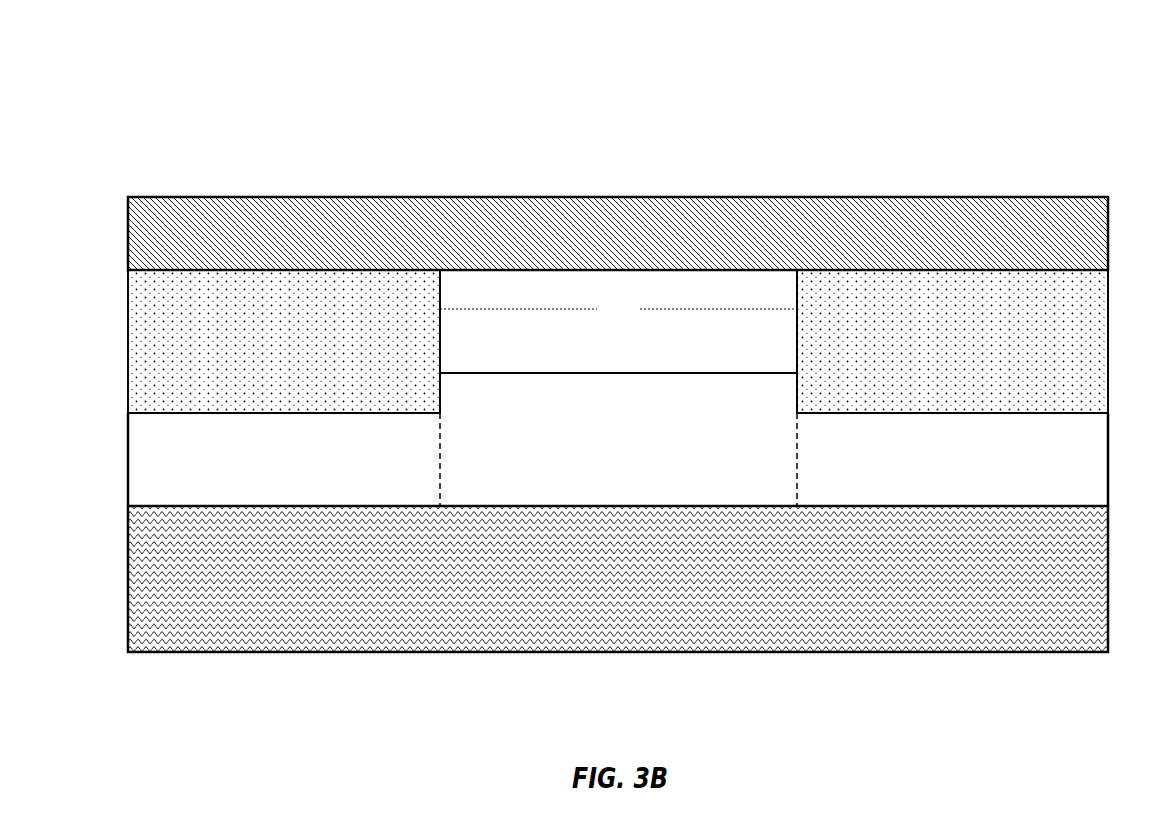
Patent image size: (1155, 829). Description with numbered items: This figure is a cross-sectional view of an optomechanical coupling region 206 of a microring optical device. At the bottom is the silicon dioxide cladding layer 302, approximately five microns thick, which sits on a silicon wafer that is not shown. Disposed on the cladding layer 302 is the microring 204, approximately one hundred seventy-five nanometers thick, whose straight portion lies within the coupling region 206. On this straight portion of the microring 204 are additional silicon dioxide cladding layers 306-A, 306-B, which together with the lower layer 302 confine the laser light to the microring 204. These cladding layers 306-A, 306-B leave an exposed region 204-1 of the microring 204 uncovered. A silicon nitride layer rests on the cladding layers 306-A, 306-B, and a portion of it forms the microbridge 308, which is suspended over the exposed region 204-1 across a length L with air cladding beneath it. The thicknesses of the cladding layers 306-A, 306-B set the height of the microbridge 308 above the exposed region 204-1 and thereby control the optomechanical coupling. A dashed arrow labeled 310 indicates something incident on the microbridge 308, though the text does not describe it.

The optomechanical coupling region 206 is at (75, 66).
The microbridge 308 is at (618, 233).
The cladding layer 306-A is at (284, 341).
The cladding layer 306-B is at (952, 341).
The microring 204 is at (618, 459).
The exposed region 204-1 is at (618, 459).
The cladding layer 302 is at (618, 579).
The incident light 310 is at (613, 180).